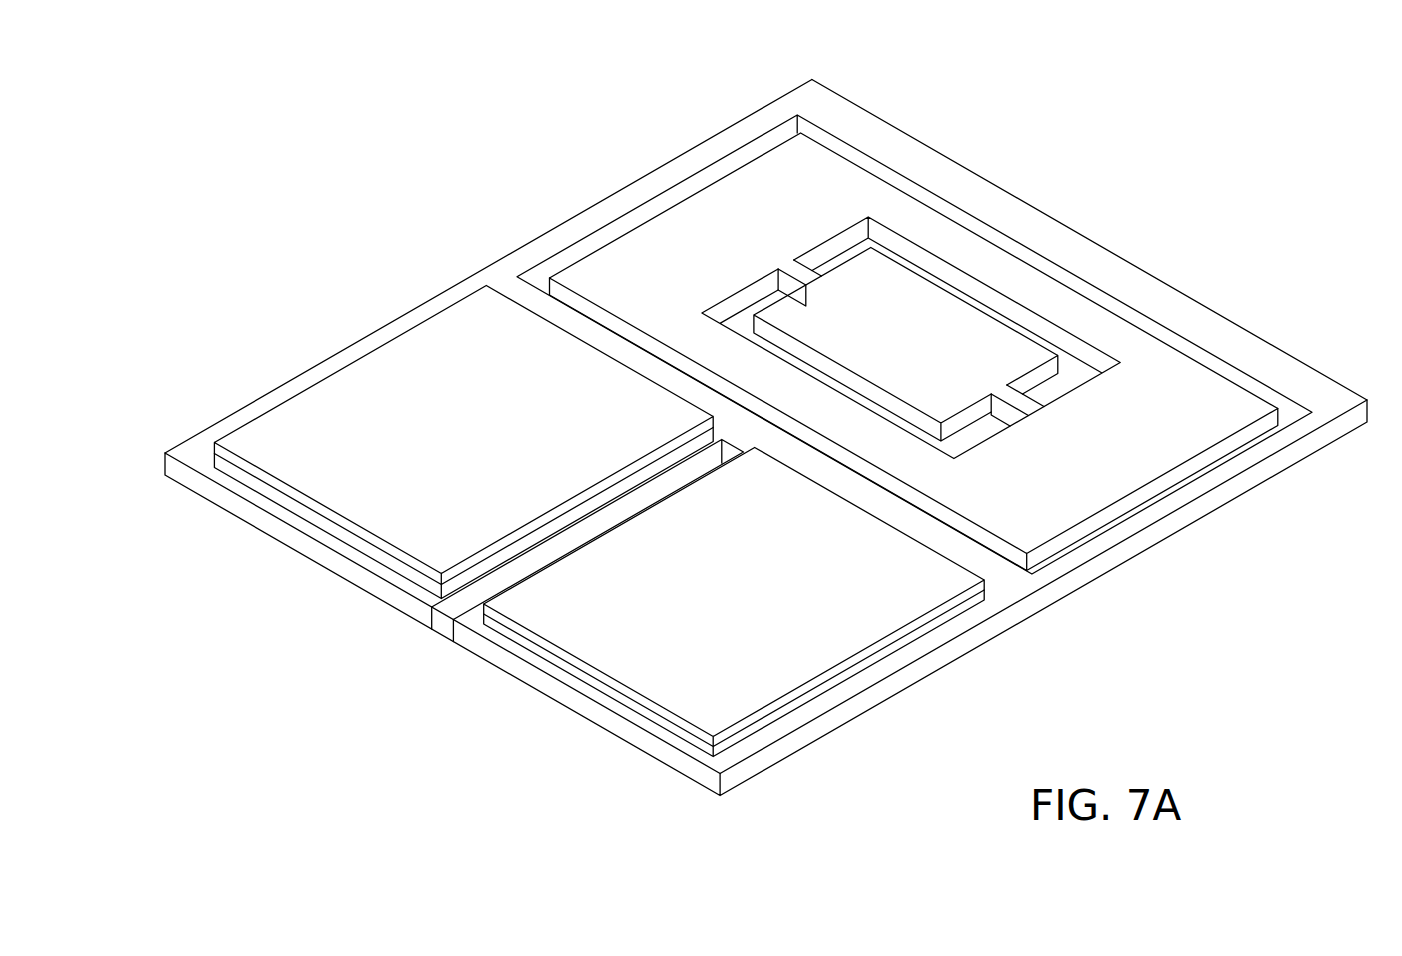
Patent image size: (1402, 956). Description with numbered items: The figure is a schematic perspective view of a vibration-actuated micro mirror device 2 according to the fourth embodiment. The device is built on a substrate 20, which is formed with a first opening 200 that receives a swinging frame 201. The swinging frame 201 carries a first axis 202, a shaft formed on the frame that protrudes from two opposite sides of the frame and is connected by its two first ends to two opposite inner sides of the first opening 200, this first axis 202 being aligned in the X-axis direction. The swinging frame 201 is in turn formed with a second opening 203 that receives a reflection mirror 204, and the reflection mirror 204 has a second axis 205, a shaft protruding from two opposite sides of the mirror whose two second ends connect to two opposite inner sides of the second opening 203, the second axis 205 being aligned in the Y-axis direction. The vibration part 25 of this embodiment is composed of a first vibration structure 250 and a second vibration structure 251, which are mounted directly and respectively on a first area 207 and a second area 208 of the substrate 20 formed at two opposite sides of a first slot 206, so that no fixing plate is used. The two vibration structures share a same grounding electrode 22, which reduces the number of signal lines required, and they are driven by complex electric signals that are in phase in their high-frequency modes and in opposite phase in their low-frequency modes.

The vibration-actuated micro mirror device 2 is at (766, 438).
The substrate 20 is at (766, 438).
The grounding electrode 22 is at (340, 537).
The vibration part 25 is at (448, 417).
The first opening 200 is at (980, 230).
The swinging frame 201 is at (855, 190).
The first axis 202 is at (1045, 262).
The second opening 203 is at (1075, 365).
The reflection mirror 204 is at (975, 340).
The second axis 205 is at (800, 277).
The first slot 206 is at (549, 557).
The first area 207 is at (248, 410).
The second area 208 is at (903, 660).
The first vibration structure 250 is at (325, 470).
The second vibration structure 251 is at (620, 660).